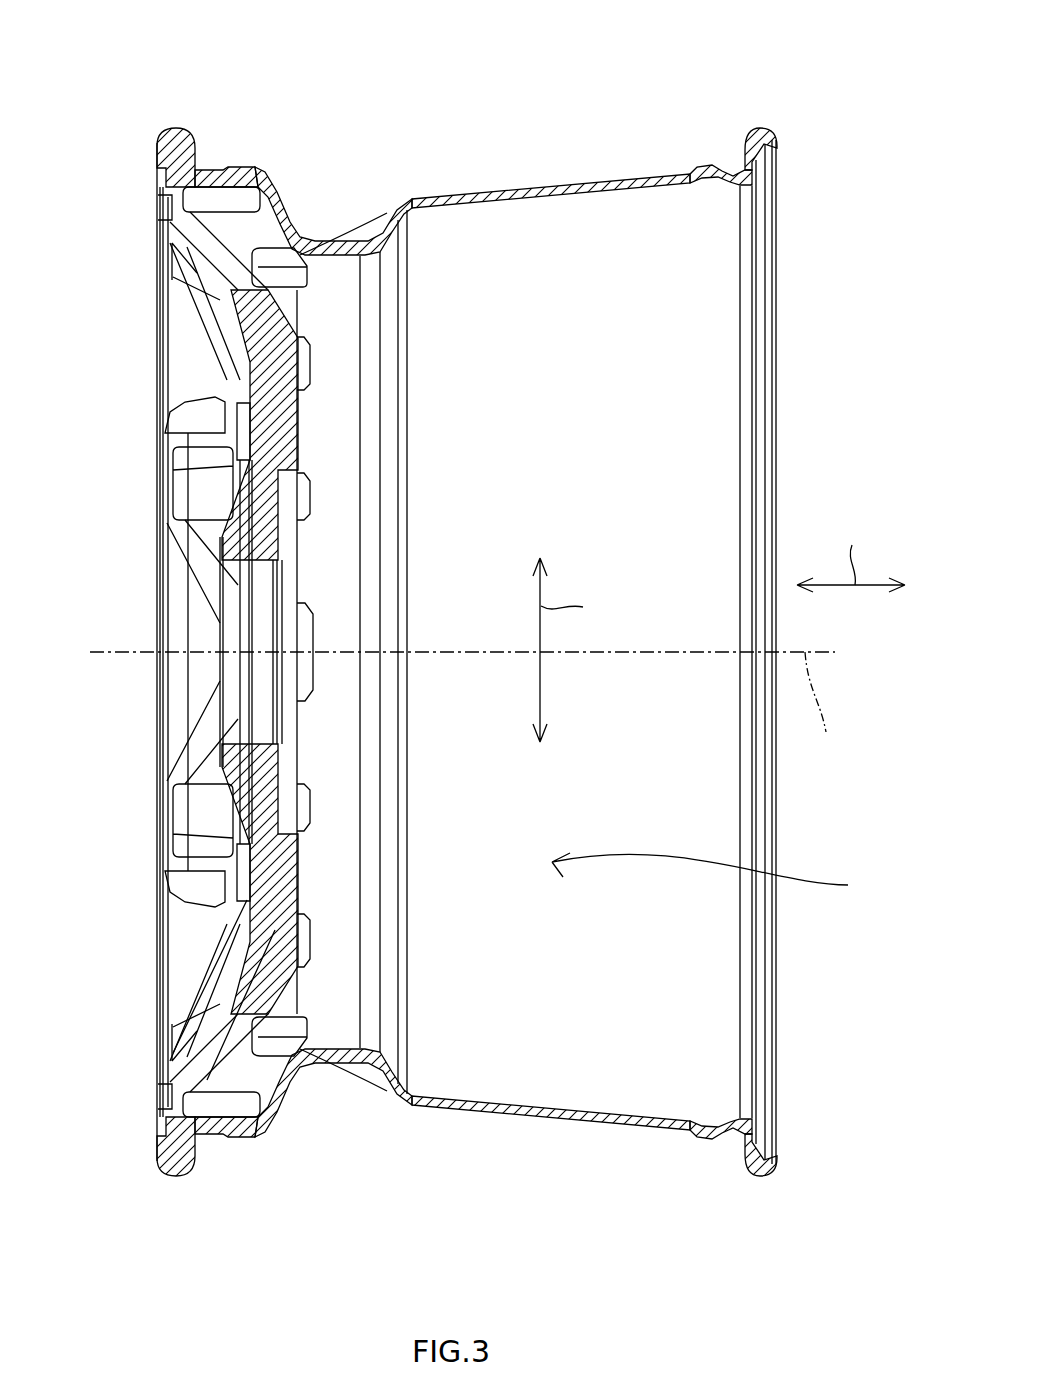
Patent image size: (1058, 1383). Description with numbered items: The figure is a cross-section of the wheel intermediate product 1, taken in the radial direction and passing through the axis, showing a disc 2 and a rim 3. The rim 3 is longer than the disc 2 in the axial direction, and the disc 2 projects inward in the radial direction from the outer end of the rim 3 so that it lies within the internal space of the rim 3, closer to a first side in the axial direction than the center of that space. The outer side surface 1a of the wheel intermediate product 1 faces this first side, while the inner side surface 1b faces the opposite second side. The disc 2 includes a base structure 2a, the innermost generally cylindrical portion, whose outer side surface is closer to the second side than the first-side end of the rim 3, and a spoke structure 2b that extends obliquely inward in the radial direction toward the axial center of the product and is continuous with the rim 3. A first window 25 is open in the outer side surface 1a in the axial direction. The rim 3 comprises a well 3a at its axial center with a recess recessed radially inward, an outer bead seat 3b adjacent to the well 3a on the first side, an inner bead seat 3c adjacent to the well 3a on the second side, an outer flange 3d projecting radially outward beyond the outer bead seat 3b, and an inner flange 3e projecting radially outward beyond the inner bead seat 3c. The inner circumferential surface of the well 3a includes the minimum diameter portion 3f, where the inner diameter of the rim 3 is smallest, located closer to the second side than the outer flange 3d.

The wheel intermediate product 1 is at (590, 130).
The outer side surface 1a is at (237, 965).
The inner side surface 1b is at (285, 980).
The disc 2 is at (86, 372).
The base structure 2a is at (240, 508).
The spoke structure 2b is at (250, 345).
The rim 3 is at (531, 172).
The well 3a is at (448, 197).
The outer bead seat 3b is at (215, 170).
The inner bead seat 3c is at (727, 175).
The outer flange 3d is at (178, 130).
The inner flange 3e is at (760, 128).
The minimum diameter portion 3f is at (305, 255).
The first window 25 is at (225, 287).